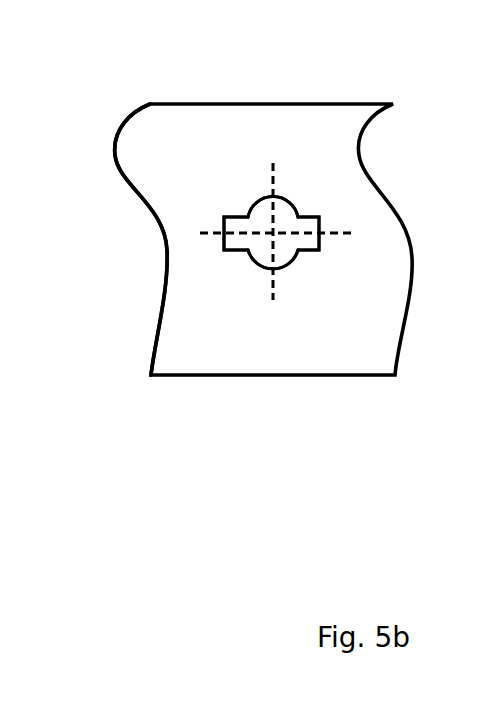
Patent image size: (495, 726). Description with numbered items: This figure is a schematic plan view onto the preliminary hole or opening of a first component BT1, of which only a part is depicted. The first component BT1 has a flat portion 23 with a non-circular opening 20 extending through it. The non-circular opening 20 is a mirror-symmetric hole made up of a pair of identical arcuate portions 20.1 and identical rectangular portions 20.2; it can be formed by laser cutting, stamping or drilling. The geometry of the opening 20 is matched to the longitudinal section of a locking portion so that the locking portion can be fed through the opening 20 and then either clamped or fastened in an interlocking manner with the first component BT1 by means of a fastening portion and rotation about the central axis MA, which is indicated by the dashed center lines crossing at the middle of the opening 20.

The non-circular opening 20 is at (241, 269).
The arcuate portions 20.1 is at (278, 196).
The rectangular portions 20.2 is at (320, 220).
The flat portion 23 is at (275, 334).
The first component BT1 is at (160, 350).
The central axis MA is at (273, 233).